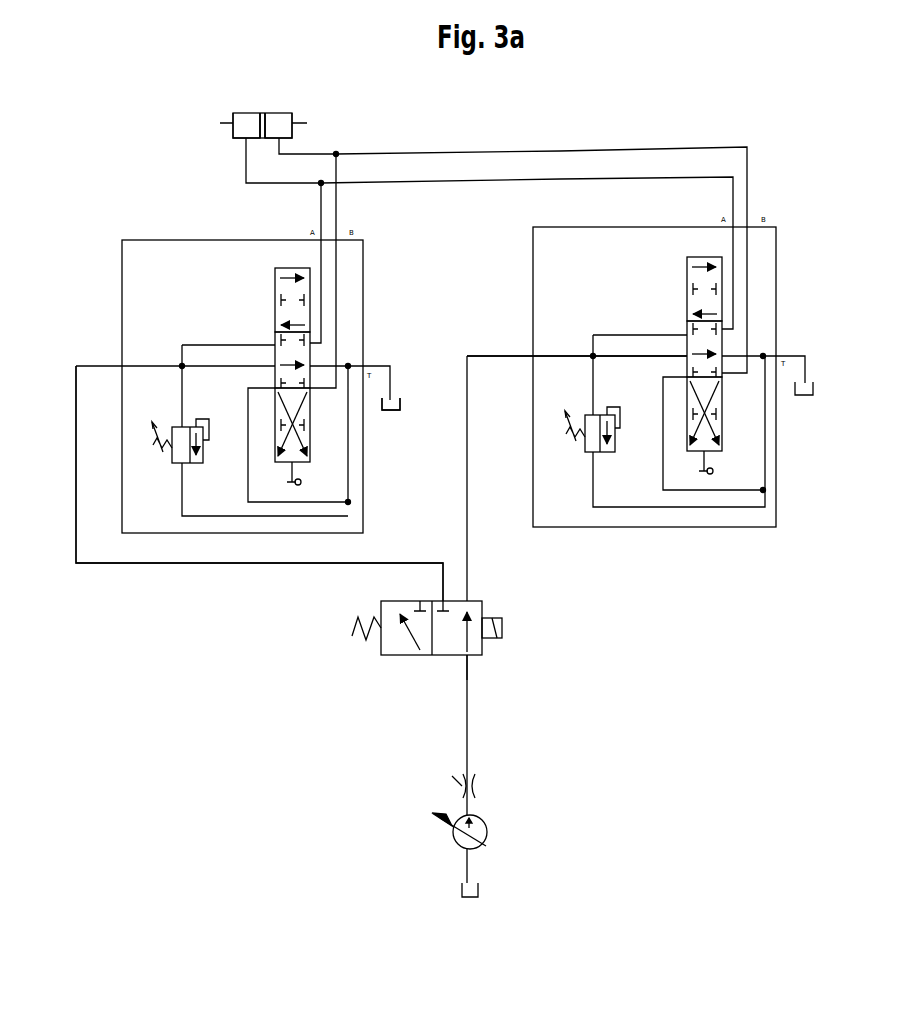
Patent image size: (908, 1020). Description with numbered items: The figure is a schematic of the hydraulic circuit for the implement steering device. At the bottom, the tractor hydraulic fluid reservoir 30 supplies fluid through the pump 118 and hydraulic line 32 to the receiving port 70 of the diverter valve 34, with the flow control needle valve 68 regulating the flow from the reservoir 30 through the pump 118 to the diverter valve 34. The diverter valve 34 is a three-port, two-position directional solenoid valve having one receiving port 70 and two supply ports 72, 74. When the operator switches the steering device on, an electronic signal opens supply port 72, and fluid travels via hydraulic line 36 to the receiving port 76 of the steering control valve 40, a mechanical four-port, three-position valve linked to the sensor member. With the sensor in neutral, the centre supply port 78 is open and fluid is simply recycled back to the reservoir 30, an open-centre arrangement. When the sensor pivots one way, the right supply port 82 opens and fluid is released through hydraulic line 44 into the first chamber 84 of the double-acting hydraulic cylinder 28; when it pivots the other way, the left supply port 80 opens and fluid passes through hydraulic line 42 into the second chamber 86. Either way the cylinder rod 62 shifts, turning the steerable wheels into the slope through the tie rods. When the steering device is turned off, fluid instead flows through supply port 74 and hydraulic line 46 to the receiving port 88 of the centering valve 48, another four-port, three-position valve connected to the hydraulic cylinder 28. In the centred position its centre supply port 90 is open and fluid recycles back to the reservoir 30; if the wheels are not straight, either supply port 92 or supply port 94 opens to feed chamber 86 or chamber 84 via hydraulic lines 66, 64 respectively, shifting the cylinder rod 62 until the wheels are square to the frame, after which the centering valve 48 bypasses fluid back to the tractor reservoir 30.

The cylinder rod 62 is at (221, 123).
The second chamber 86 is at (243, 118).
The double-acting hydraulic cylinder 28 is at (250, 113).
The first chamber 84 is at (277, 118).
The hydraulic line 64 is at (537, 150).
The hydraulic line 66 is at (523, 183).
The hydraulic line 42 is at (321, 210).
The hydraulic line 44 is at (337, 196).
The steering control valve 40 is at (238, 386).
The left supply port 80 is at (334, 305).
The centre supply port 78 is at (335, 359).
The right supply port 82 is at (335, 436).
The receiving port 76 is at (305, 362).
The hydraulic fluid reservoir 30 is at (402, 397).
The hydraulic line 36 is at (262, 568).
The centering valve 48 is at (648, 377).
The supply port 92 is at (750, 293).
The centre supply port 90 is at (750, 349).
The supply port 94 is at (758, 425).
The receiving port 88 is at (688, 357).
The hydraulic line 46 is at (468, 481).
The diverter valve 34 is at (458, 617).
The supply port 72 is at (437, 601).
The supply port 74 is at (467, 601).
The receiving port 70 is at (467, 660).
The hydraulic line 32 is at (470, 717).
The flow control needle valve 68 is at (479, 786).
The pump 118 is at (490, 817).